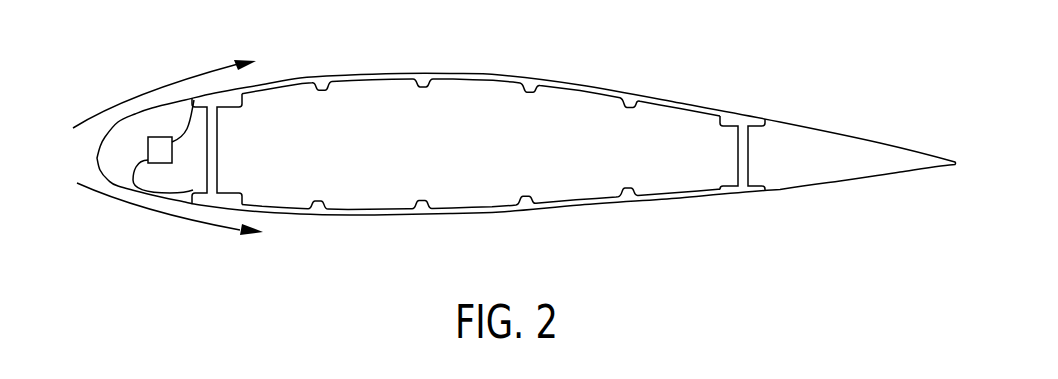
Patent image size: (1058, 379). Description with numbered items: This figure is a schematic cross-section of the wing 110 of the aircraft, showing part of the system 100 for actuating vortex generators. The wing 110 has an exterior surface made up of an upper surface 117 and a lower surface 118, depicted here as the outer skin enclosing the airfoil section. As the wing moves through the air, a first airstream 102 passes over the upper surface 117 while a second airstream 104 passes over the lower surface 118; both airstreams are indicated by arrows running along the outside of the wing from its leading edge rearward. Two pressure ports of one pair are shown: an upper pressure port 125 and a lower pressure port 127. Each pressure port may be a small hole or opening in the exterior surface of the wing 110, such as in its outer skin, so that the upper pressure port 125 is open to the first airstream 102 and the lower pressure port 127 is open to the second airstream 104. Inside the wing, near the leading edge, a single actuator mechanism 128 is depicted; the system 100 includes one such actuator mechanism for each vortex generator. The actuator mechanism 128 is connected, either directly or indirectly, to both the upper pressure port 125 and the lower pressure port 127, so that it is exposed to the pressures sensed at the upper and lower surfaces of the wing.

The system 100 is at (844, 107).
The first airstream 102 is at (162, 86).
The second airstream 104 is at (182, 223).
The wing 110 is at (680, 100).
The upper surface 117 is at (138, 103).
The lower surface 118 is at (132, 203).
The upper pressure port 125 is at (194, 100).
The lower pressure port 127 is at (137, 180).
The actuator mechanism 128 is at (172, 148).